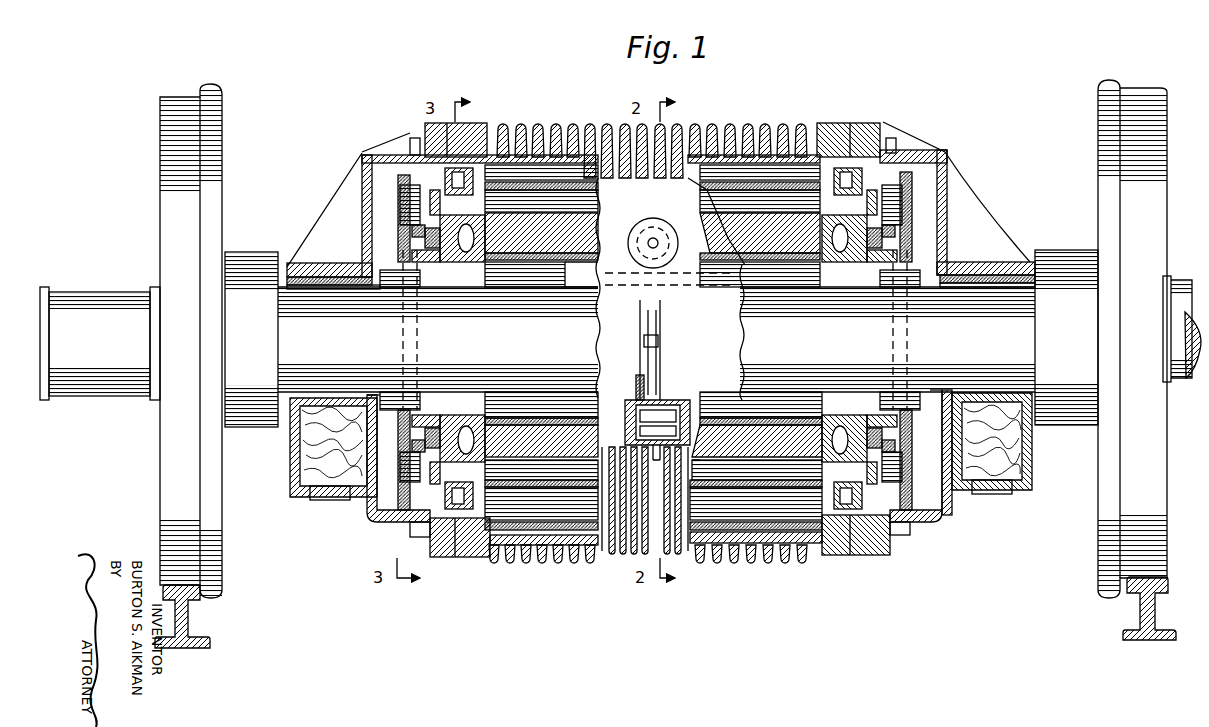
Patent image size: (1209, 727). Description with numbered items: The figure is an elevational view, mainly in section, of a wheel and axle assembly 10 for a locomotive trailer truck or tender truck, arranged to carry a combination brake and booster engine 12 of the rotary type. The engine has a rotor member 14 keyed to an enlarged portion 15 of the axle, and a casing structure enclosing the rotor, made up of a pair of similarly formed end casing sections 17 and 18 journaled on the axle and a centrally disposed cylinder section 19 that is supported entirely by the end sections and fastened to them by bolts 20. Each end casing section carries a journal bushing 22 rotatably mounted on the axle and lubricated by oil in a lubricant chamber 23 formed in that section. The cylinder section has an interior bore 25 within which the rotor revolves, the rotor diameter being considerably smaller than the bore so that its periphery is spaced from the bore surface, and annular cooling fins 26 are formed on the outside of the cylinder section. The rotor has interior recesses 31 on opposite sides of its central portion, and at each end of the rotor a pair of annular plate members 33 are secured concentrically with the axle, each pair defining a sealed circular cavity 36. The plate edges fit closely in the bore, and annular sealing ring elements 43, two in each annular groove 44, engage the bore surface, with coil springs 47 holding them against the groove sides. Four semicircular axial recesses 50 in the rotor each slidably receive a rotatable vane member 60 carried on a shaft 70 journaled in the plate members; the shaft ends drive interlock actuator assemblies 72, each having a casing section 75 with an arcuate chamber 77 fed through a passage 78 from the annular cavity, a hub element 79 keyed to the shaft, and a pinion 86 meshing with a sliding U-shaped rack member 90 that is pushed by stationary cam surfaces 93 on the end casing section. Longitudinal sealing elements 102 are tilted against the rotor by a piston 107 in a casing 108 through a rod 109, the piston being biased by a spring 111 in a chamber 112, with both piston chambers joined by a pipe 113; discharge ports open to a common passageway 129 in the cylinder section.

The wheel and axle assembly 10 is at (247, 437).
The combination brake and booster engine 12 is at (922, 148).
The rotor member 14 is at (578, 300).
The enlarged portion 15 is at (578, 345).
The end casing section 17 is at (370, 507).
The end casing section 18 is at (950, 512).
The cylinder section 19 is at (824, 140).
The bolts 20 is at (412, 140).
The journal bushing 22 is at (290, 262).
The lubricant chamber 23 is at (292, 462).
The interior bore 25 is at (547, 158).
The annular cooling fins 26 is at (730, 127).
The interior recesses 31 is at (545, 260).
The annular plate members 33 is at (488, 400).
The circular cavity 36 is at (462, 395).
The annular sealing ring elements 43 is at (428, 540).
The annular groove 44 is at (474, 556).
The coil springs 47 is at (455, 555).
The arcuate recesses 50 is at (772, 400).
The vane member 60 is at (772, 188).
The shaft 70 is at (512, 190).
The interlock actuator assembly 72 is at (432, 242).
The casing section 75 is at (440, 258).
The arcuate chamber 77 is at (430, 240).
The passage 78 is at (455, 247).
The hub element 79 is at (420, 228).
The pinion 86 is at (410, 202).
The rack member 90 is at (403, 180).
The cam surfaces 93 is at (405, 395).
The sealing elements 102 is at (668, 326).
The piston 107 is at (632, 416).
The casing 108 is at (683, 402).
The rod 109 is at (668, 366).
The spring 111 is at (640, 386).
The chamber 112 is at (632, 436).
The pipe 113 is at (734, 494).
The common passageway 129 is at (556, 550).